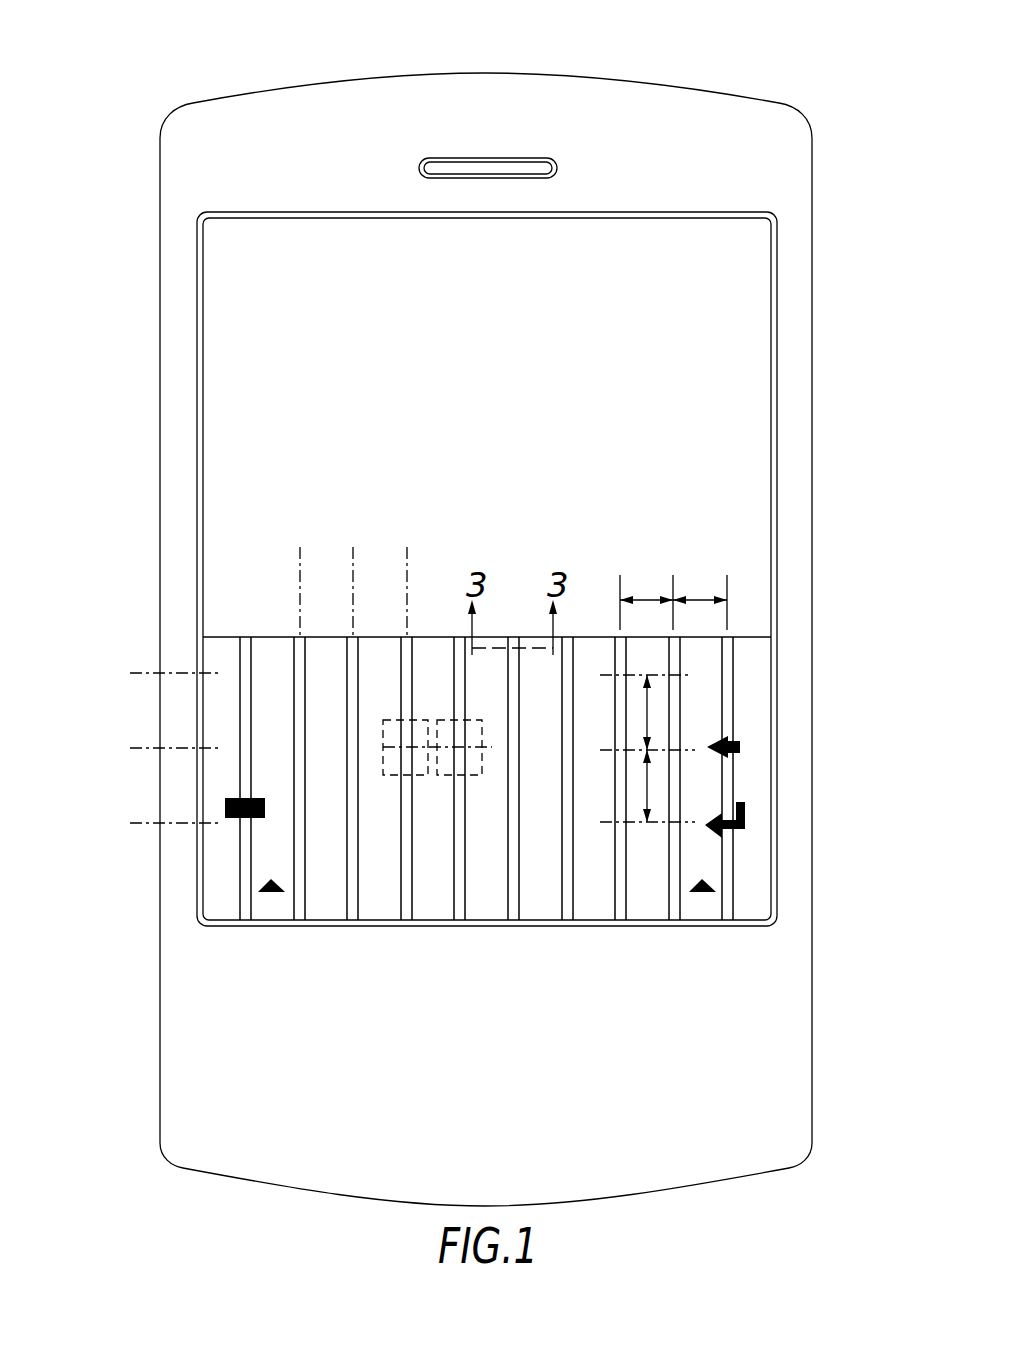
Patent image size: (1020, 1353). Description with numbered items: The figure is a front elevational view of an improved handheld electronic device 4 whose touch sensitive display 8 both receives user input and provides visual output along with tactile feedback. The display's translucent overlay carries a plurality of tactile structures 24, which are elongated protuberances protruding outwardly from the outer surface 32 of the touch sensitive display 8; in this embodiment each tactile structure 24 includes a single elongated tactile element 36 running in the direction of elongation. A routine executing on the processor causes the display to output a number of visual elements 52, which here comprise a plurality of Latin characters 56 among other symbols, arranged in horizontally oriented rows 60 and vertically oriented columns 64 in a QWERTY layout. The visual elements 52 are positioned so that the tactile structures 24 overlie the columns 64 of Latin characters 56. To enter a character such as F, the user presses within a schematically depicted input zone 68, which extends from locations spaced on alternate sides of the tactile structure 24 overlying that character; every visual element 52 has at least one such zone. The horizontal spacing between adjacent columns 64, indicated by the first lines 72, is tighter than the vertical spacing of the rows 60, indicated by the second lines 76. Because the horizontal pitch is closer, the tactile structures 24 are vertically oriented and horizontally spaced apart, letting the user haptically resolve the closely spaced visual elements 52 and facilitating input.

The handheld electronic device 4 is at (652, 70).
The touch sensitive display 8 is at (471, 734).
The tactile structures 24 is at (251, 905).
The outer surface 32 is at (745, 336).
The tactile elements 36 is at (252, 866).
The visual elements 52 is at (262, 658).
The Latin characters 56 is at (238, 662).
The rows 60 is at (143, 676).
The columns 64 is at (300, 547).
The input zone 68 is at (395, 775).
The first lines 72 is at (652, 598).
The second lines 76 is at (650, 716).